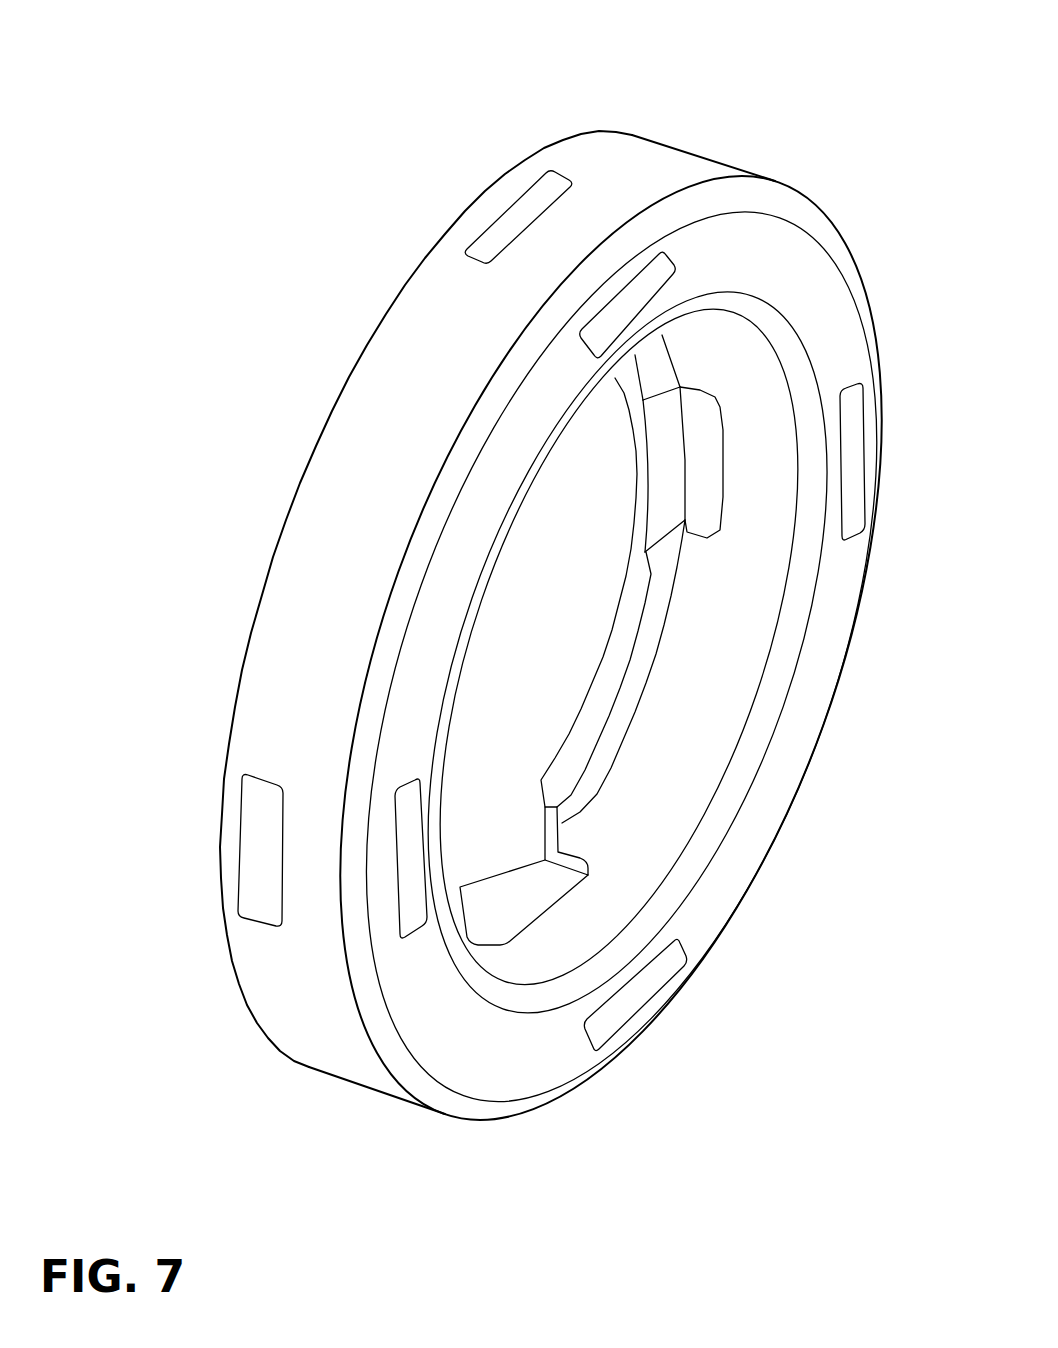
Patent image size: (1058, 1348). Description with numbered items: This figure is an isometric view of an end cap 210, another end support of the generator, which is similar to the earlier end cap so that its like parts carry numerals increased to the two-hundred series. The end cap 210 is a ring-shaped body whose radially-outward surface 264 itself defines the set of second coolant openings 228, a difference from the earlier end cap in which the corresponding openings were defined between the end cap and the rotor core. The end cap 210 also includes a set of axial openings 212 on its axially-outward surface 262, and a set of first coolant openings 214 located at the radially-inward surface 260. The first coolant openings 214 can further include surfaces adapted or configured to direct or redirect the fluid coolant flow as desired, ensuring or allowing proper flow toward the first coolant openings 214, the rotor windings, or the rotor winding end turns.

The end cap 210 is at (414, 31).
The axial openings 212 is at (874, 455).
The first coolant openings 214 is at (566, 856).
The second coolant openings 228 is at (557, 172).
The radially-inward surface 260 is at (712, 612).
The axially-outward surface 262 is at (816, 634).
The radially-outward surface 264 is at (626, 176).